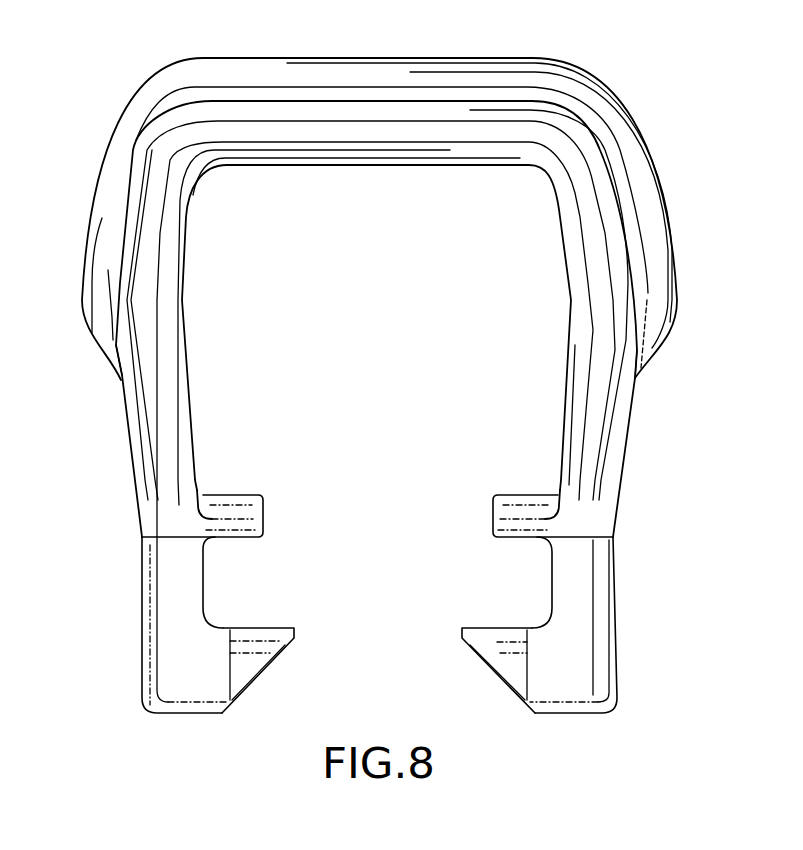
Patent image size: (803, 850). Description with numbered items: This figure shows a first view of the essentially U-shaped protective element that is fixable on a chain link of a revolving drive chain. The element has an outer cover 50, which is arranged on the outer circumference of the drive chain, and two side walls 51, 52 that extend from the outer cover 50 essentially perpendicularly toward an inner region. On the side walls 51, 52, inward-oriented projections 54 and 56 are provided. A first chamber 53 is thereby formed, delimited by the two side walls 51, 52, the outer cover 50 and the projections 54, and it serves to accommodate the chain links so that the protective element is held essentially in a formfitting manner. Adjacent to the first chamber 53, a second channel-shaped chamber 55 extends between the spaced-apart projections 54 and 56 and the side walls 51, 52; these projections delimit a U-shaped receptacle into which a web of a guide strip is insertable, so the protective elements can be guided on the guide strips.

The outer cover 50 is at (390, 118).
The side wall 51 is at (605, 380).
The side wall 52 is at (148, 386).
The first chamber 53 is at (392, 338).
The projection 54 is at (513, 507).
The second channel-shaped chamber 55 is at (392, 598).
The projection 56 is at (253, 657).